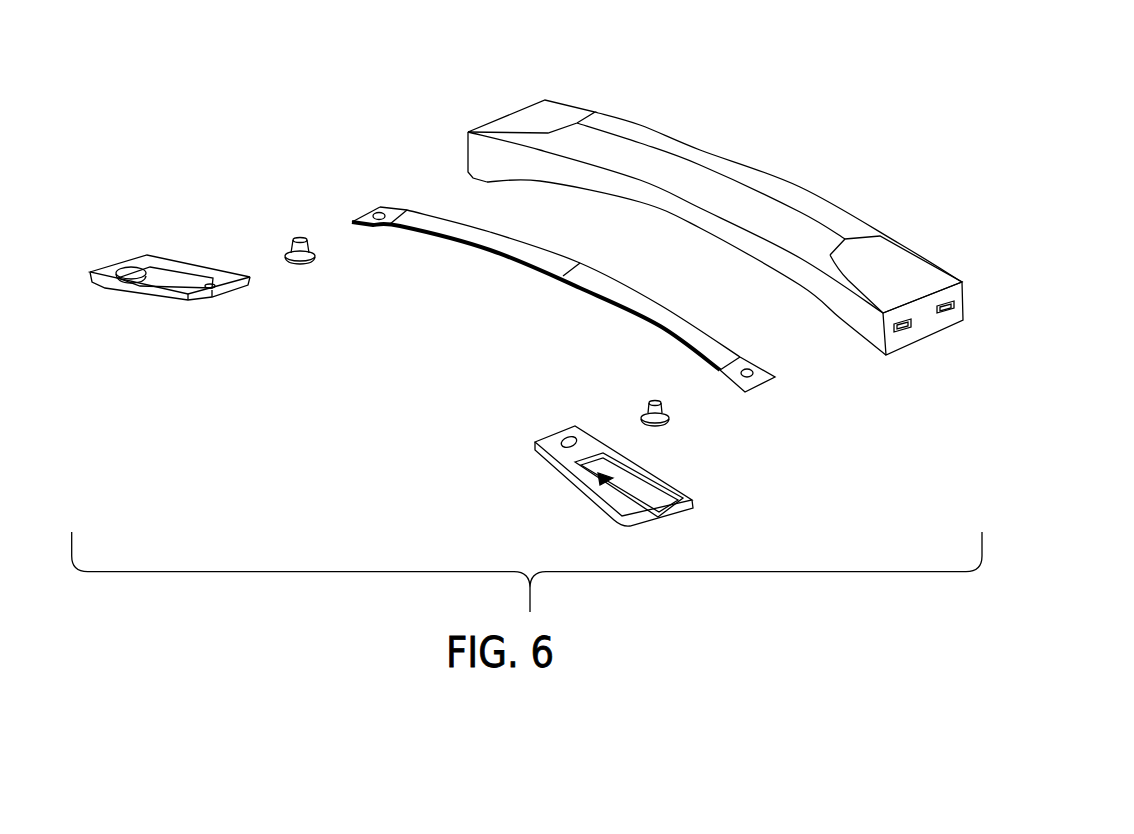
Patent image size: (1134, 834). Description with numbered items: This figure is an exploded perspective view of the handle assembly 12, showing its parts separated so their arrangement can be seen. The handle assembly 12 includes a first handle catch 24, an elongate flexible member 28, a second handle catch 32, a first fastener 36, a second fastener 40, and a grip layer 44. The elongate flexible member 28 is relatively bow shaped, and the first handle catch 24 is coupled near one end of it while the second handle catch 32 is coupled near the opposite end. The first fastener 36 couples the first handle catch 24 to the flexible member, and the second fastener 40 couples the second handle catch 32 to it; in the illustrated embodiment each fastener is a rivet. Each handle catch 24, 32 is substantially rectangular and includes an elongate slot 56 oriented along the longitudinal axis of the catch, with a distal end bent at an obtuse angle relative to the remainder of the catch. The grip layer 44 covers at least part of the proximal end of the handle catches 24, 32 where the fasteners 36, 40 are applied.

The handle assembly 12 is at (446, 75).
The grip layer 44 is at (692, 152).
The elongate flexible member 28 is at (535, 250).
The first handle catch 24 is at (187, 270).
The second handle catch 32 is at (638, 473).
The first fastener 36 is at (297, 237).
The second fastener 40 is at (653, 397).
The elongate slot 56 is at (147, 285).